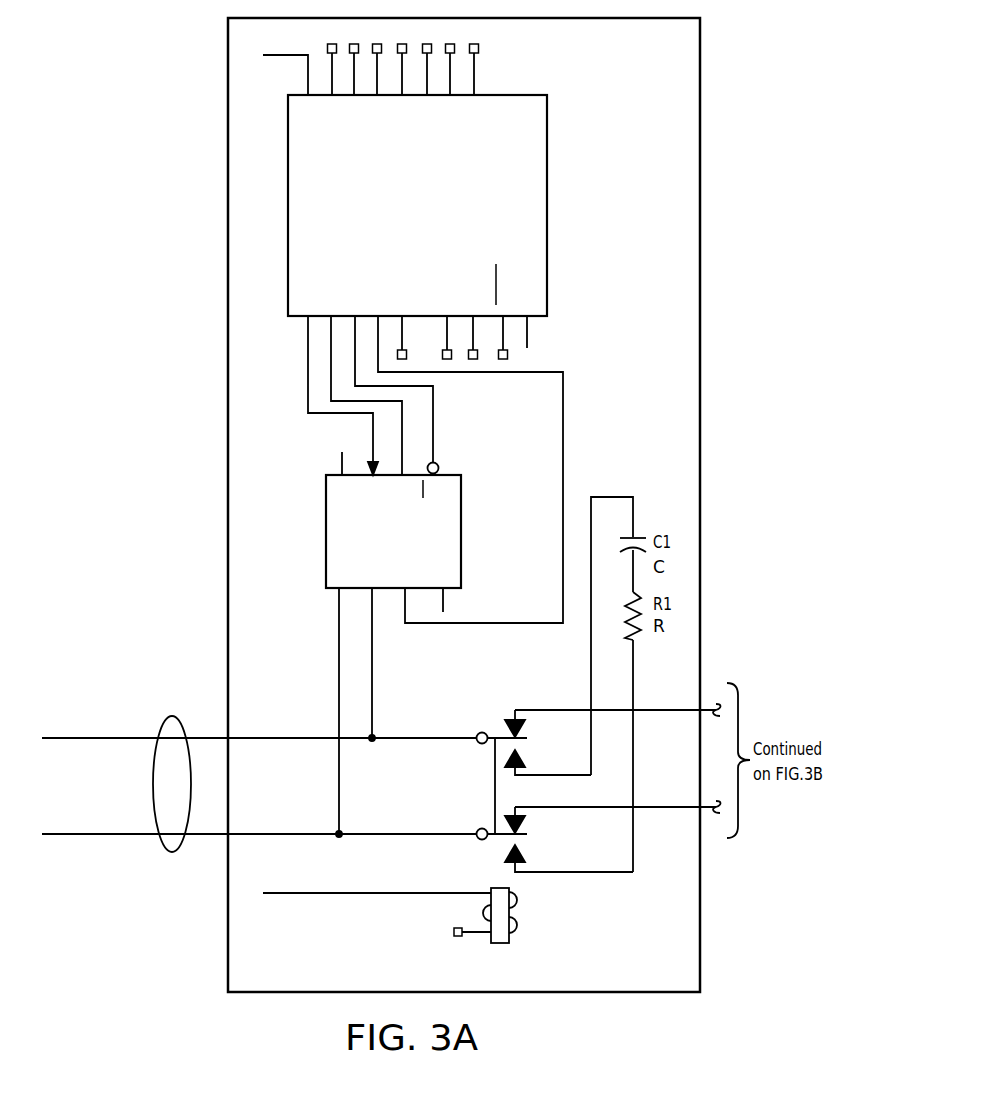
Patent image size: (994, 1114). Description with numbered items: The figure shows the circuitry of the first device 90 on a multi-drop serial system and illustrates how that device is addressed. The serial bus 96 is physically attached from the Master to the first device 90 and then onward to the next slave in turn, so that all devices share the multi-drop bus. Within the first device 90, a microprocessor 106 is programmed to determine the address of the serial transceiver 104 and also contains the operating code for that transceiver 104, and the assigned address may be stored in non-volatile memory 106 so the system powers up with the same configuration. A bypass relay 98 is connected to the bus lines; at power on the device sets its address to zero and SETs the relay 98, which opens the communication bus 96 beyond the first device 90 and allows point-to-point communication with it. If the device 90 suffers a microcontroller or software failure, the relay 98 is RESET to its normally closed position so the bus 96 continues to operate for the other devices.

The first device 90 is at (240, 102).
The microprocessor 106 is at (308, 212).
The RS-485 transceiver U17 104 is at (326, 528).
The serial bus 96 is at (172, 852).
The bypass relay 98 is at (547, 912).